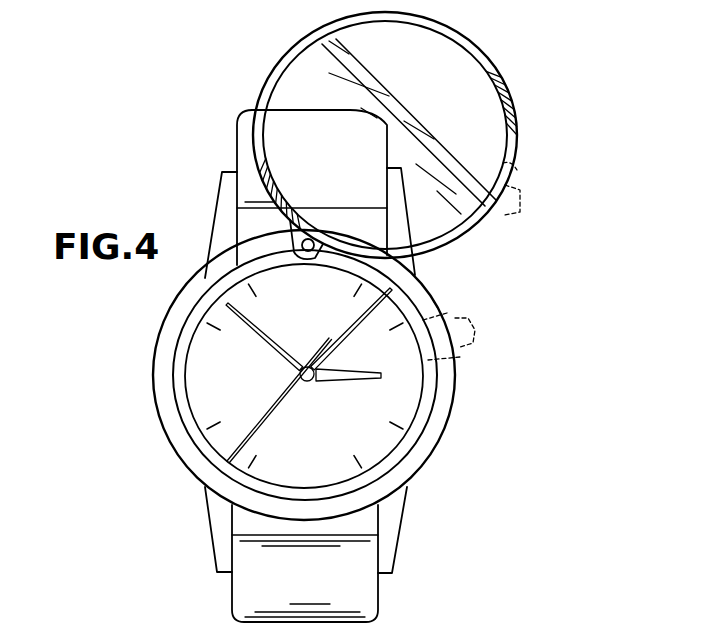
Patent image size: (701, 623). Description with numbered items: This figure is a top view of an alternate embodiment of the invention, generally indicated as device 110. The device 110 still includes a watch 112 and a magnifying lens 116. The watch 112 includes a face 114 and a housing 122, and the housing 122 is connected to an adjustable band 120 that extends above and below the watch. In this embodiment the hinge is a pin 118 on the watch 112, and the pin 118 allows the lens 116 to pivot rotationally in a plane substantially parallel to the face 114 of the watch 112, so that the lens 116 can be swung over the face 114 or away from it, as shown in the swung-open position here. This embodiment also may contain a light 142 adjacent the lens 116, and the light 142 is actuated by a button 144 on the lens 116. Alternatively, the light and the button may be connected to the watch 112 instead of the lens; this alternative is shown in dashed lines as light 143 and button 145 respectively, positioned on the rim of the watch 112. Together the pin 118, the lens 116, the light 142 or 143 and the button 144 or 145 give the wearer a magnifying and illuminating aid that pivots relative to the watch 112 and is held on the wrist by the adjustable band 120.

The device 110 is at (133, 320).
The watch 112 is at (441, 452).
The face 114 is at (445, 420).
The magnifying lens 116 is at (499, 65).
The pin 118 is at (310, 240).
The adjustable band 120 is at (237, 140).
The housing 122 is at (190, 466).
The light 142 is at (513, 155).
The light 143 is at (438, 300).
The button 144 is at (516, 196).
The button 145 is at (478, 328).